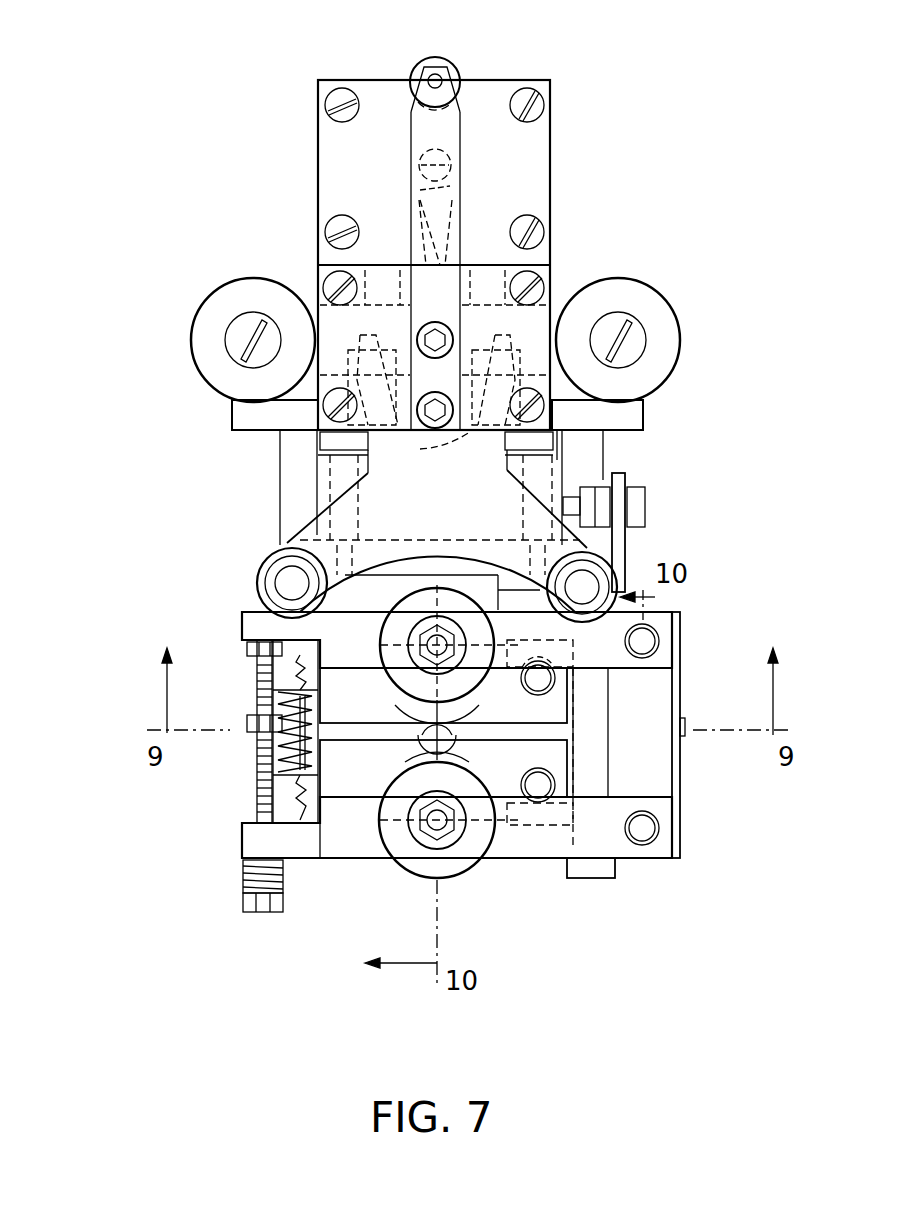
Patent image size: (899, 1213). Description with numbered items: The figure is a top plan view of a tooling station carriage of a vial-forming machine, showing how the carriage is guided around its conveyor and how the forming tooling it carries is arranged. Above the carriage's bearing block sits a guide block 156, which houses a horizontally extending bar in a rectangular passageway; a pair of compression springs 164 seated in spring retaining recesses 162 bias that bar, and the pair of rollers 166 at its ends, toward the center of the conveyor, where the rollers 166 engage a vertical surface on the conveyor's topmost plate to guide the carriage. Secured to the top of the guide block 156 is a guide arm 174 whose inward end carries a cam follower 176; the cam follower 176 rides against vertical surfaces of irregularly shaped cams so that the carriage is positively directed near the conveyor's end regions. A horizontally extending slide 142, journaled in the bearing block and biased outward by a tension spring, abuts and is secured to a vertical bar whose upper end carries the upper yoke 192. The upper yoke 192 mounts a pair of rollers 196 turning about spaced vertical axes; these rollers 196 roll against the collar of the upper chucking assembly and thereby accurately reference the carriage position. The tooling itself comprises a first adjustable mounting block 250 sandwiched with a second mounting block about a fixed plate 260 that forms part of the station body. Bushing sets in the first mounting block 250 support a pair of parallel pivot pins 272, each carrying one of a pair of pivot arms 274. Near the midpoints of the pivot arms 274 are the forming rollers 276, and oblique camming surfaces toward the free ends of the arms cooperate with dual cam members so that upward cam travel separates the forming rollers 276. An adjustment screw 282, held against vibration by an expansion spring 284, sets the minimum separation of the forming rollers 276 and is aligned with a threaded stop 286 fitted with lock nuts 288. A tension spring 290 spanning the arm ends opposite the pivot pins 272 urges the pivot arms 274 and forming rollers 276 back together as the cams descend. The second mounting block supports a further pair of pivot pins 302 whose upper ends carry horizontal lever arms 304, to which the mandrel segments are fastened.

The slide 142 is at (368, 457).
The guide block 156 is at (530, 318).
The spring retaining recesses 162 is at (434, 347).
The compression springs 164 is at (426, 447).
The rollers 166 is at (217, 286).
The guide arm 174 is at (457, 170).
The cam follower 176 is at (448, 62).
The upper yoke 192 is at (313, 530).
The rollers 196 is at (258, 580).
The first adjustable mounting block 250 is at (668, 783).
The fixed plate 260 is at (590, 865).
The pivot pins 272 is at (650, 642).
The pivot arms 274 is at (660, 618).
The forming rollers 276 is at (455, 683).
The adjustment screw 282 is at (258, 812).
The expansion spring 284 is at (245, 880).
The threaded stop 286 is at (260, 690).
The lock nuts 288 is at (248, 645).
The tension spring 290 is at (258, 785).
The pivot pins 302 is at (548, 680).
The lever arms 304 is at (527, 712).